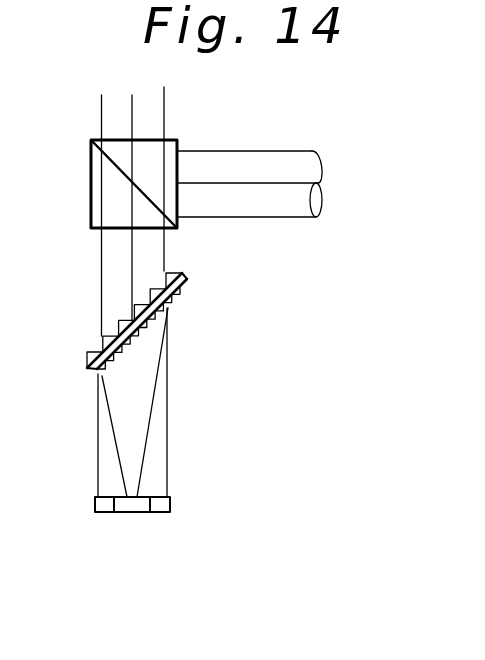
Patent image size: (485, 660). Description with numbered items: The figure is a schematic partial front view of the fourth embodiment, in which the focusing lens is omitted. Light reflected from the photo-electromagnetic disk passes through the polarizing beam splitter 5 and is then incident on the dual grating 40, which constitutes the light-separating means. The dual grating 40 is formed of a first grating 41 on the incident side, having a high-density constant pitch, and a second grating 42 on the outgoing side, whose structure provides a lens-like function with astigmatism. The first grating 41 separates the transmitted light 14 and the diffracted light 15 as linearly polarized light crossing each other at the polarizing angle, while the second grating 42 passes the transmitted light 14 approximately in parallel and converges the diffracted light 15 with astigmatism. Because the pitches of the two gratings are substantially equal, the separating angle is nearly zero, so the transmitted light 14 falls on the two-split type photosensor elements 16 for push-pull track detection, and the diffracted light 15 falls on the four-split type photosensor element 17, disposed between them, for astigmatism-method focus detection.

The polarizing beam splitter 5 is at (91, 160).
The dual grating 40 is at (120, 316).
The first grating 41 is at (150, 290).
The second grating 42 is at (134, 338).
The transmitted light 14 is at (167, 399).
The diffracted light 15 is at (144, 453).
The two-split type photosensor elements 16 is at (104, 504).
The four-split type photosensor element 17 is at (131, 503).